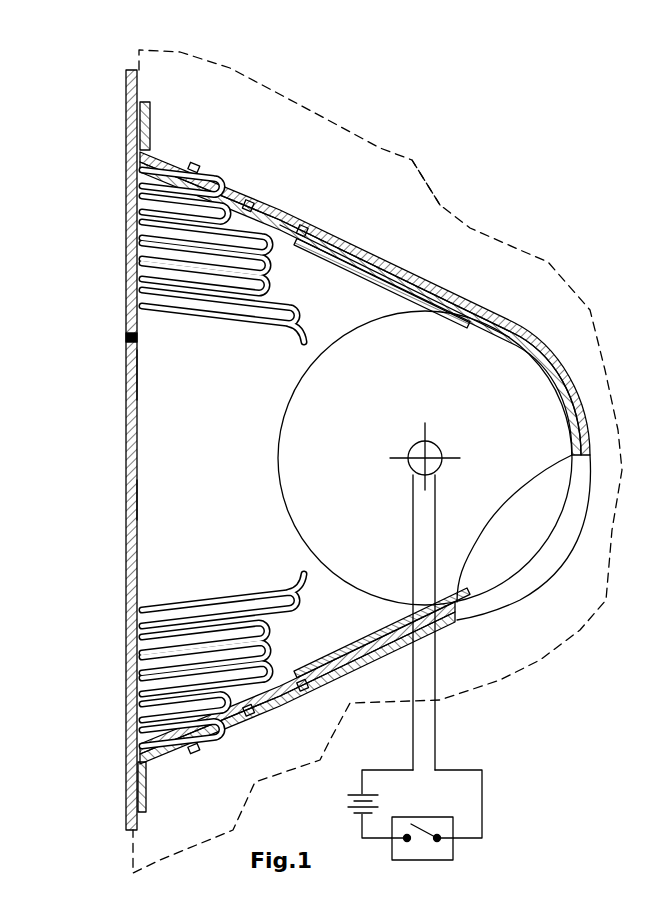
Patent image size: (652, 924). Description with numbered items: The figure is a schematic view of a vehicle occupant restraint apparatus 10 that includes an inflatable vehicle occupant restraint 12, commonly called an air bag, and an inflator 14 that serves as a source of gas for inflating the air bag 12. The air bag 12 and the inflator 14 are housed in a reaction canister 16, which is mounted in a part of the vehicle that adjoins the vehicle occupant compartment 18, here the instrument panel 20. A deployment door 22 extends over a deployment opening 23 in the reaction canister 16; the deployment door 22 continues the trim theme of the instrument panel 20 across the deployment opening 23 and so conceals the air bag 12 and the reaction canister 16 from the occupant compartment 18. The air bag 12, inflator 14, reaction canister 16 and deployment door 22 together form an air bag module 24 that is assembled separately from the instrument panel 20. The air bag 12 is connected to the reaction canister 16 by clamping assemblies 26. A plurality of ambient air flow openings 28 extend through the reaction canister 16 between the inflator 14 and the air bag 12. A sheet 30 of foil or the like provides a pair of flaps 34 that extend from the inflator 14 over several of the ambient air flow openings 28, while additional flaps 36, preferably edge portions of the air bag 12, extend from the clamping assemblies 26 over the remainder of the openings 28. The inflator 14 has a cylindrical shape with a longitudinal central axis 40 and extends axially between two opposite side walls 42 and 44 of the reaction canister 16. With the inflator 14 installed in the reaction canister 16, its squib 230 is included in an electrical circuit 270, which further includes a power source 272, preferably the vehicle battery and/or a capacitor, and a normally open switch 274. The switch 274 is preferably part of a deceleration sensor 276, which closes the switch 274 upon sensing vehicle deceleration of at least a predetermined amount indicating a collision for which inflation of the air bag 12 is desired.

The vehicle occupant restraint apparatus 10 is at (97, 122).
The inflatable vehicle occupant restraint 12 is at (148, 225).
The inflator 14 is at (275, 440).
The reaction canister 16 is at (474, 294).
The vehicle occupant compartment 18 is at (72, 381).
The instrument panel 20 is at (128, 62).
The deployment door 22 is at (128, 143).
The deployment opening 23 is at (126, 337).
The air bag module 24 is at (407, 243).
The clamping assemblies 26 is at (188, 160).
The ambient air flow openings 28 is at (283, 214).
The sheet 30 is at (380, 292).
The flaps 34 is at (303, 250).
The additional flaps 36 is at (250, 200).
The longitudinal central axis 40 is at (433, 442).
The side wall 42 is at (157, 503).
The side wall 44 is at (523, 507).
The squib 230 is at (408, 444).
The electrical circuit 270 is at (452, 765).
The power source 272 is at (357, 795).
The normally open switch 274 is at (427, 832).
The deceleration sensor 276 is at (423, 860).